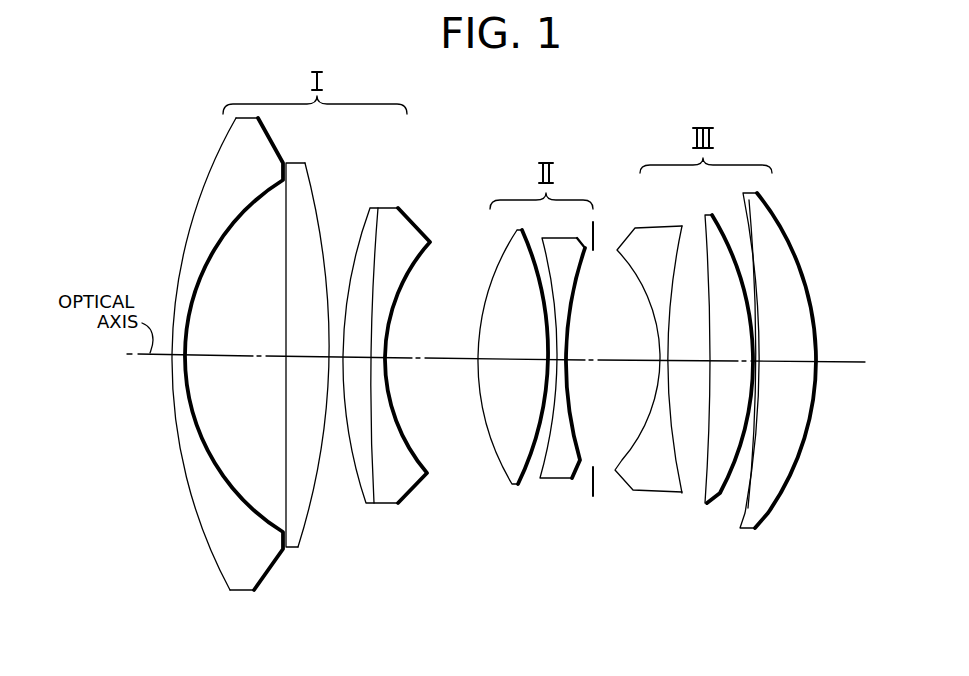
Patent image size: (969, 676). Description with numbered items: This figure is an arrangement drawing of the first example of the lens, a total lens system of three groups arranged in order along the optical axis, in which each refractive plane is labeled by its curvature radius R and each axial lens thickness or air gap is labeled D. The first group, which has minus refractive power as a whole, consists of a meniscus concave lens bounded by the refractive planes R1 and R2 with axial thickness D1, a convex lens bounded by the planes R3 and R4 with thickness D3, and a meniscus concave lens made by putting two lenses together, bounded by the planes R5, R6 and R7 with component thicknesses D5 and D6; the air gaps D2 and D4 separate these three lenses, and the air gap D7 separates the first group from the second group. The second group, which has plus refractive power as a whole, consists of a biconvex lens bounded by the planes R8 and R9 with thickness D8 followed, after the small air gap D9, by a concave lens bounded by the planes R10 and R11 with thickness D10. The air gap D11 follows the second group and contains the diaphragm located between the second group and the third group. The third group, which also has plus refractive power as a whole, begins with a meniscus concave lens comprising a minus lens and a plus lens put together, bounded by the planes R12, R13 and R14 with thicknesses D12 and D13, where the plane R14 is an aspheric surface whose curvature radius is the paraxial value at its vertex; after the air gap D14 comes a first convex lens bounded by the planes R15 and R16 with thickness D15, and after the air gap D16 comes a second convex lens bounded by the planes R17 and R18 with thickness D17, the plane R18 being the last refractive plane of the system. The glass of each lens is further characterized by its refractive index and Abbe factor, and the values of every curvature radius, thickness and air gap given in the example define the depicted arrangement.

The curvature radius of first refractive plane R1 is at (230, 590).
The curvature radius of second refractive plane R2 is at (272, 530).
The curvature radius of third refractive plane R3 is at (292, 547).
The curvature radius of fourth refractive plane R4 is at (303, 547).
The curvature radius of fifth refractive plane R5 is at (358, 492).
The curvature radius of sixth refractive plane R6 is at (380, 492).
The curvature radius of seventh refractive plane R7 is at (413, 470).
The curvature radius of eighth refractive plane R8 is at (505, 478).
The curvature radius of ninth refractive plane R9 is at (525, 475).
The curvature radius of tenth refractive plane R10 is at (542, 467).
The curvature radius of eleventh refractive plane R11 is at (565, 482).
The curvature radius of twelfth refractive plane R12 is at (622, 477).
The curvature radius of thirteenth refractive plane R13 is at (678, 472).
The curvature radius of fourteenth refractive plane R14 is at (693, 495).
The curvature radius of fifteenth refractive plane R15 is at (705, 503).
The curvature radius of sixteenth refractive plane R16 is at (723, 493).
The curvature radius of seventeenth refractive plane R17 is at (745, 513).
The curvature radius of eighteenth refractive plane R18 is at (768, 513).
The axial thickness of first lens D1 is at (189, 328).
The air gap between first and second lenses D2 is at (241, 344).
The axial thickness of second lens D3 is at (303, 344).
The air gap between second and third lenses D4 is at (326, 321).
The axial thickness of first element of third lens D5 is at (359, 344).
The axial thickness of second element of third lens D6 is at (389, 328).
The air gap between group I and group II D7 is at (440, 344).
The axial thickness of biconvex lens of group II D8 is at (510, 346).
The air gap within group II D9 is at (547, 333).
The axial thickness of concave lens of group II D10 is at (563, 334).
The air gap between group II and group III D11 is at (615, 346).
The axial thickness of minus lens of group III D12 is at (657, 338).
The axial thickness of plus lens of group III D13 is at (692, 348).
The air gap after cemented lens of group III D14 is at (709, 341).
The axial thickness of first convex lens of group III D15 is at (734, 348).
The air gap between convex lenses of group III D16 is at (761, 360).
The axial thickness of second convex lens of group III D17 is at (789, 348).